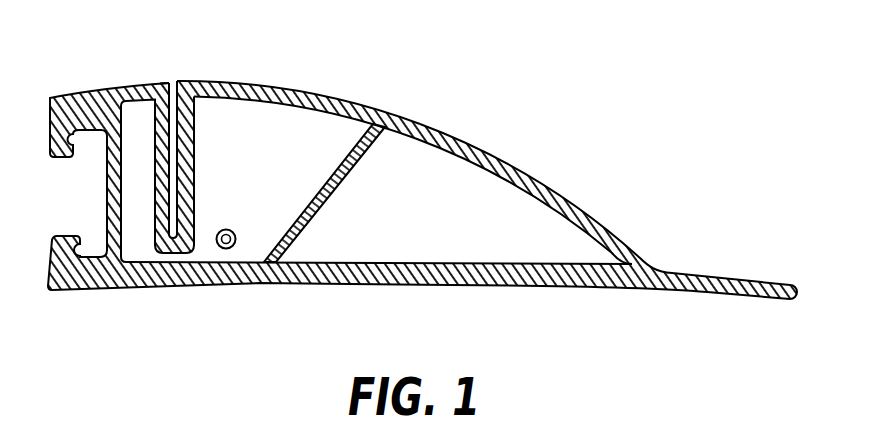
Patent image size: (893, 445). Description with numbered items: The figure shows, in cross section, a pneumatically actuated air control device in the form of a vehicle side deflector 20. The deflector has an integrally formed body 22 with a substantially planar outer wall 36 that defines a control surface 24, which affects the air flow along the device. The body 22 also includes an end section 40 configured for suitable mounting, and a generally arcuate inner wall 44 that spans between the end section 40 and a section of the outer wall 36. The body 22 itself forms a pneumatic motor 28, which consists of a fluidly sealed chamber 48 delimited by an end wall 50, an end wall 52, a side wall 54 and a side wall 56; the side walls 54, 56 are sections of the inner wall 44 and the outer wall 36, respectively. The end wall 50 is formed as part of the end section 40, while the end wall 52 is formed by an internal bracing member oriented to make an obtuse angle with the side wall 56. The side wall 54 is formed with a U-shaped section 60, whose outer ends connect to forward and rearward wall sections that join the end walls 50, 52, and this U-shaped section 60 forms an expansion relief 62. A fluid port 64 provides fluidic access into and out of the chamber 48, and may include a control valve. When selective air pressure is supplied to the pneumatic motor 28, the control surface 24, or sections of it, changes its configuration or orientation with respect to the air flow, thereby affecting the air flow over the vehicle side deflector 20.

The vehicle side deflector 20 is at (545, 79).
The body 22 is at (84, 100).
The control surface 24 is at (487, 285).
The pneumatic motor 28 is at (182, 66).
The outer wall 36 is at (424, 275).
The end section 40 is at (69, 185).
The inner wall 44 is at (460, 138).
The chamber 48 is at (322, 133).
The end wall 50 is at (106, 198).
The end wall 52 is at (300, 227).
The side wall 54 is at (202, 69).
The side wall 56 is at (154, 298).
The U-shaped section 60 is at (194, 158).
The expansion relief 62 is at (168, 99).
The fluid port 64 is at (227, 249).